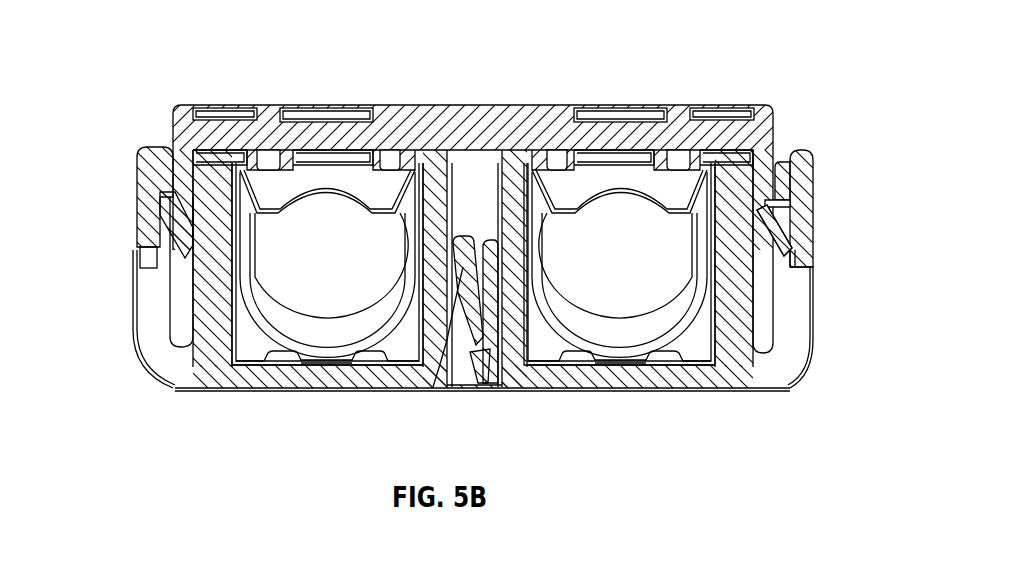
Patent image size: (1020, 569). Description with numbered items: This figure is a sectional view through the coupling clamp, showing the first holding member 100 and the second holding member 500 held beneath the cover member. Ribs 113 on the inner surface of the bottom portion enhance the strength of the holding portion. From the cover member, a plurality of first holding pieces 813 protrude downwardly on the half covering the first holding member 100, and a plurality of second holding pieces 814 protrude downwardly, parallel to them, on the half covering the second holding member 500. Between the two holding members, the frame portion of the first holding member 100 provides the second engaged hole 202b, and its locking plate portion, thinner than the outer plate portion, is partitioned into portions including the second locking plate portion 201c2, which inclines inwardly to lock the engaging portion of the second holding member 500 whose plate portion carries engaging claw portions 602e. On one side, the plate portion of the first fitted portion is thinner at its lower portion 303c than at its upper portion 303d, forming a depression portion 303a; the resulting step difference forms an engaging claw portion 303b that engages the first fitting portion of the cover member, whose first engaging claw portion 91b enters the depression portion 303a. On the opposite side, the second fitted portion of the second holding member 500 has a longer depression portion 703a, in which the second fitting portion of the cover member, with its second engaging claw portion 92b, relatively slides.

The first holding member 100 is at (713, 380).
The second holding member 500 is at (327, 387).
The ribs 113 is at (272, 362).
The second holding pieces 814 is at (345, 170).
The first holding pieces 813 is at (650, 170).
The second engaged hole 202b is at (463, 267).
The engaging claw portions 602e is at (490, 380).
The second locking plate portion 201c2 is at (433, 387).
The depression portion 703a is at (193, 240).
The second engaging claw portion 92b is at (170, 213).
The engaging claw portion 303b is at (770, 180).
The upper portion 303d is at (807, 160).
The lower portion 303c is at (803, 207).
The depression portion 303a is at (780, 240).
The first engaging claw portion 91b is at (766, 258).